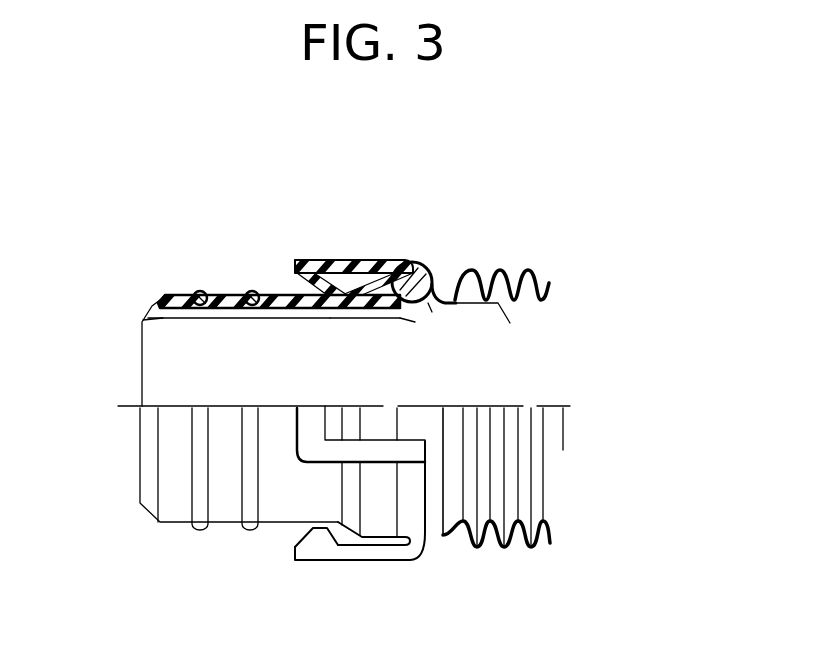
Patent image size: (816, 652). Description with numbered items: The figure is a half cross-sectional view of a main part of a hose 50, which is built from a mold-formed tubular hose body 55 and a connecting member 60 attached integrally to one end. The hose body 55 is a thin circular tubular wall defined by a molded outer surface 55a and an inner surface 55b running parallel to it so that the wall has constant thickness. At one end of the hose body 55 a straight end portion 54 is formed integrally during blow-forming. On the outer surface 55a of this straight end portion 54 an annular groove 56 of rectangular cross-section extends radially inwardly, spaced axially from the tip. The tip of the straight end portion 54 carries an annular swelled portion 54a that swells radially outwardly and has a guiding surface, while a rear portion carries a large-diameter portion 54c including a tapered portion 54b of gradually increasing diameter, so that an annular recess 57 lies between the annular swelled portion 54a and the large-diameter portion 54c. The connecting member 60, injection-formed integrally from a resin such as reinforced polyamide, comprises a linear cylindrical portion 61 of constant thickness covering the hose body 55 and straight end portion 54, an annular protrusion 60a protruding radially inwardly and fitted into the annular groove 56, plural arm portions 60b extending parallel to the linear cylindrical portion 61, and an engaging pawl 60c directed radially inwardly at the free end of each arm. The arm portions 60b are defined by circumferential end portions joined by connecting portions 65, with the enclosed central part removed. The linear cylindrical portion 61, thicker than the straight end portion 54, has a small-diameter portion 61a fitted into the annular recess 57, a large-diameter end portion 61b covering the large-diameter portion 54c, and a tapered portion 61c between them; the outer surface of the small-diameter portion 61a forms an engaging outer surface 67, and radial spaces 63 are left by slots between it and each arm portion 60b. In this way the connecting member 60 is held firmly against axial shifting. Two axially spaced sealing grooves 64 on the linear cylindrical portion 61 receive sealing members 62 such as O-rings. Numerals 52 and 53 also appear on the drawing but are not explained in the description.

The hose 50 is at (499, 166).
The bellows 52 is at (507, 548).
The coil spring 53 is at (545, 282).
The straight end portion 54 is at (316, 316).
The annular swelled portion 54a is at (145, 305).
The tapered portion 54b is at (362, 313).
The large-diameter portion 54c is at (400, 322).
The hose body 55 is at (441, 545).
The outer surface 55a is at (453, 273).
The inner surface 55b is at (515, 328).
The annular groove 56 is at (428, 308).
The annular recess 57 is at (218, 318).
The connecting member 60 is at (413, 560).
The annular protrusion 60a is at (420, 266).
The arm portions 60b is at (387, 244).
The engaging pawl 60c is at (313, 260).
The linear cylindrical portion 61 is at (229, 293).
The small-diameter portion 61a is at (280, 318).
The large-diameter end portion 61b is at (352, 260).
The tapered portion 61c is at (335, 260).
The sealing members 62 is at (200, 530).
The radial spaces 63 is at (340, 530).
The sealing grooves 64 is at (197, 291).
The connecting portions 65 is at (305, 433).
The engaging outer surface 67 is at (224, 530).